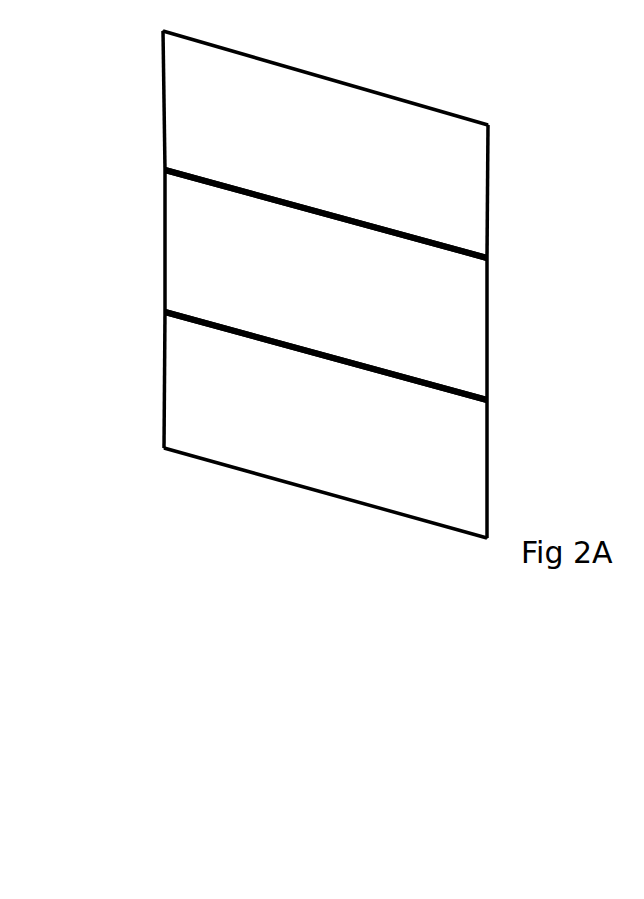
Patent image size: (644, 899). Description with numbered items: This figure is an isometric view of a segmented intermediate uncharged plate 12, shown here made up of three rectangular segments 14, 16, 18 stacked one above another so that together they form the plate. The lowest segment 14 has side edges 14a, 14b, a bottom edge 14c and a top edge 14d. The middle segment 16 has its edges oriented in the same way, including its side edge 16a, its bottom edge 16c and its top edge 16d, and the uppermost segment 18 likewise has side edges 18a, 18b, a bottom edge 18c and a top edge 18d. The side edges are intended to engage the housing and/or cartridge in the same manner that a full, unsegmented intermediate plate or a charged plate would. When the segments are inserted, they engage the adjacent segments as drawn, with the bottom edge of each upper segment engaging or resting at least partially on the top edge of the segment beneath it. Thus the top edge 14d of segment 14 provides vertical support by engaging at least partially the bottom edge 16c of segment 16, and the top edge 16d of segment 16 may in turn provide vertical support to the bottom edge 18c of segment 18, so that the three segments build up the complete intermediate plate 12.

The segmented intermediate plate 12 is at (445, 80).
The segment 14 is at (385, 455).
The side edge 14a is at (493, 432).
The side edge 14b is at (165, 398).
The bottom edge 14c is at (244, 470).
The top edge 14d is at (233, 334).
The segment 16 is at (243, 256).
The side edge 16a is at (163, 280).
The bottom edge 16c is at (348, 363).
The top edge 16d is at (366, 236).
The segment 18 is at (414, 160).
The side edge 18a is at (497, 242).
The side edge 18b is at (163, 120).
The bottom edge 18c is at (332, 215).
The top edge 18d is at (210, 46).